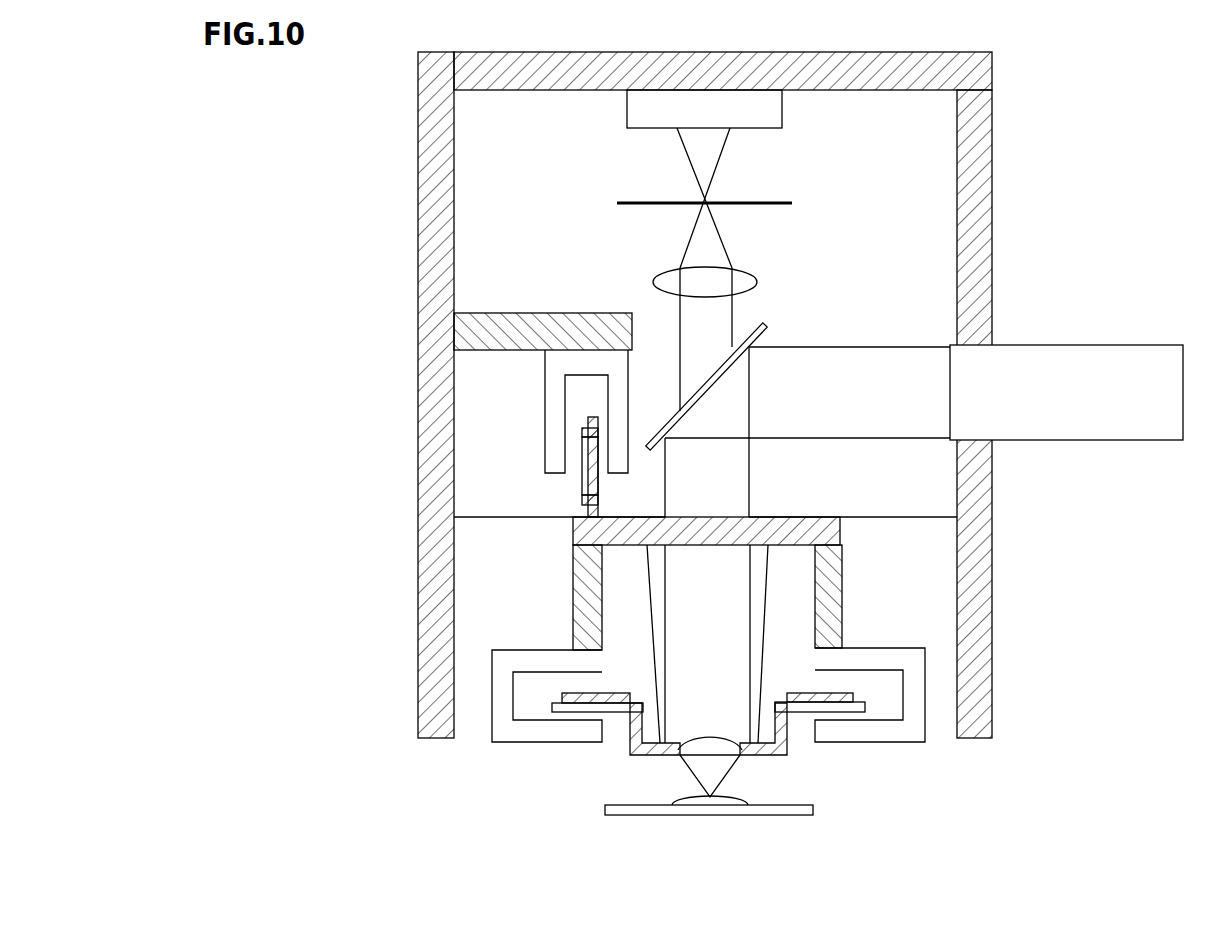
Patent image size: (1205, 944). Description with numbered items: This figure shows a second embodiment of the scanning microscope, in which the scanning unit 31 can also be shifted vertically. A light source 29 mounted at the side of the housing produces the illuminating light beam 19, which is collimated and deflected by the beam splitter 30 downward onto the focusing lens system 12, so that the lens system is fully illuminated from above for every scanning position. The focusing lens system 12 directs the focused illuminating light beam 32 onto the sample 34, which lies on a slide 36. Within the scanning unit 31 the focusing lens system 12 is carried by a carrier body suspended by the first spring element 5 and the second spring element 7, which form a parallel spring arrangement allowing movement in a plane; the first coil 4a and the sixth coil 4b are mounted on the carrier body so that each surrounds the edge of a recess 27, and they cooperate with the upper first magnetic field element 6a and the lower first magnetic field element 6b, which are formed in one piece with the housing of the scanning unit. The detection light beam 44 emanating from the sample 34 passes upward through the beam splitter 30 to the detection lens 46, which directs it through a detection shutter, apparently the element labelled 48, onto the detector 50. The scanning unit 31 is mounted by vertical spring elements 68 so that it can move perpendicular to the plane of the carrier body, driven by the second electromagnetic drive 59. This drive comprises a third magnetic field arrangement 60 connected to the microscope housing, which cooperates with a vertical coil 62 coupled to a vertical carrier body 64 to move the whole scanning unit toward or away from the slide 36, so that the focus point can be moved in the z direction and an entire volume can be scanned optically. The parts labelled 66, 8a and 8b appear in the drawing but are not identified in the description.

The detector 50 is at (690, 121).
The aperture / slit 48 is at (705, 203).
The detection light beam 44 is at (680, 330).
The detection lens 46 is at (740, 268).
The beam splitter 30 is at (765, 327).
The illuminating light beam 19 is at (860, 362).
The light source 29 is at (1052, 409).
The vertical spring elements 68 is at (890, 517).
The second electromagnetic drive 59 is at (505, 438).
The third magnetic field arrangement 60 is at (555, 410).
The vertical coil 62 is at (585, 430).
The vertical carrier body 64 is at (598, 505).
The slider 66 is at (595, 475).
The scanning unit 31 is at (573, 595).
The first spring element 5 is at (653, 643).
The second spring element 7 is at (766, 655).
The left bracket upper arm 8a is at (520, 660).
The left bracket lower arm 8b is at (548, 735).
The upper first magnetic field element 6a is at (888, 658).
The lower first magnetic field element 6b is at (878, 735).
The first coil 4a is at (633, 702).
The sixth coil 4b is at (853, 700).
The recess 27 is at (615, 712).
The focusing lens system 12 is at (683, 750).
The focused illuminating light beam 32 is at (712, 785).
The sample 34 is at (727, 803).
The slide 36 is at (800, 812).